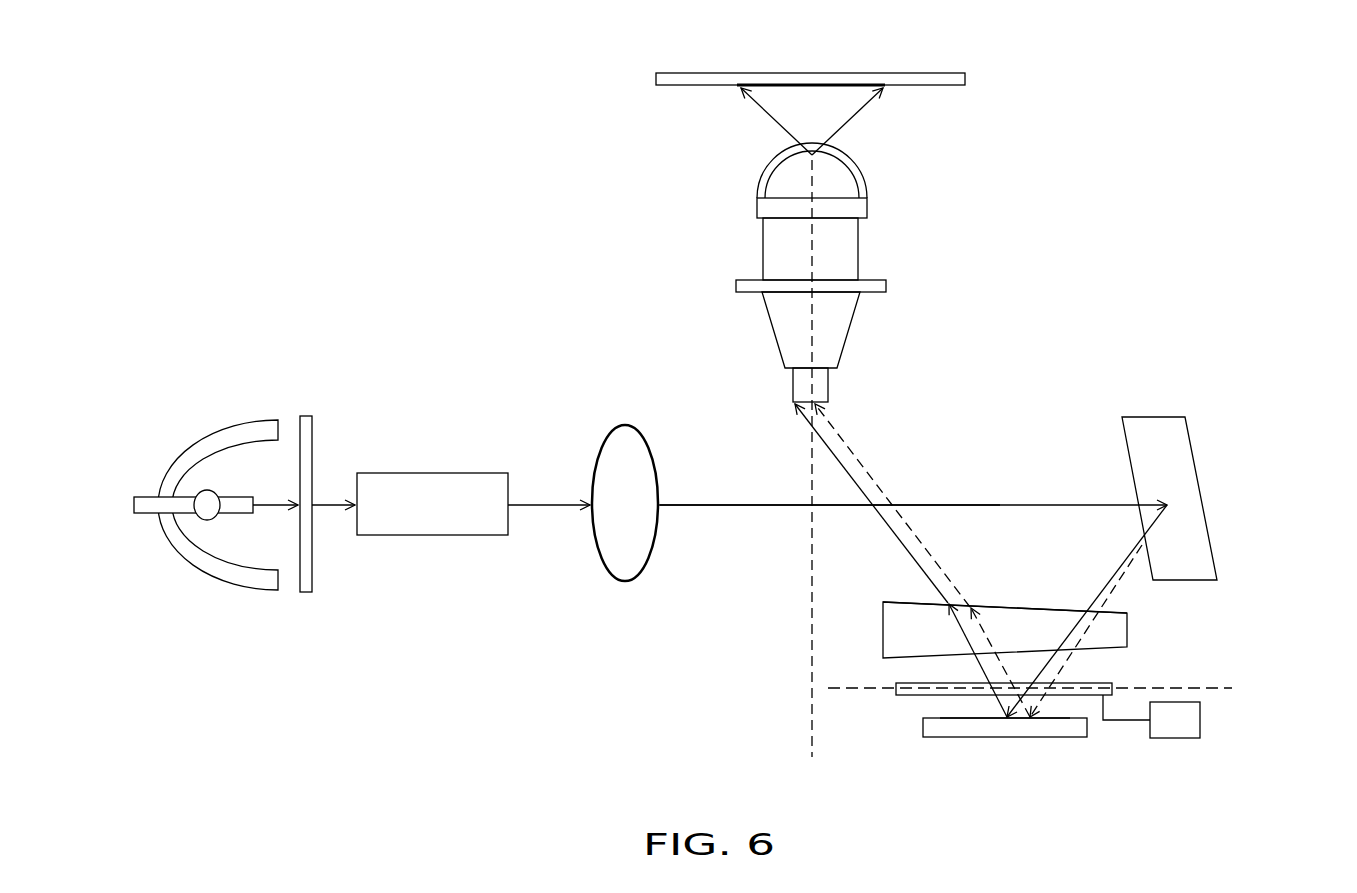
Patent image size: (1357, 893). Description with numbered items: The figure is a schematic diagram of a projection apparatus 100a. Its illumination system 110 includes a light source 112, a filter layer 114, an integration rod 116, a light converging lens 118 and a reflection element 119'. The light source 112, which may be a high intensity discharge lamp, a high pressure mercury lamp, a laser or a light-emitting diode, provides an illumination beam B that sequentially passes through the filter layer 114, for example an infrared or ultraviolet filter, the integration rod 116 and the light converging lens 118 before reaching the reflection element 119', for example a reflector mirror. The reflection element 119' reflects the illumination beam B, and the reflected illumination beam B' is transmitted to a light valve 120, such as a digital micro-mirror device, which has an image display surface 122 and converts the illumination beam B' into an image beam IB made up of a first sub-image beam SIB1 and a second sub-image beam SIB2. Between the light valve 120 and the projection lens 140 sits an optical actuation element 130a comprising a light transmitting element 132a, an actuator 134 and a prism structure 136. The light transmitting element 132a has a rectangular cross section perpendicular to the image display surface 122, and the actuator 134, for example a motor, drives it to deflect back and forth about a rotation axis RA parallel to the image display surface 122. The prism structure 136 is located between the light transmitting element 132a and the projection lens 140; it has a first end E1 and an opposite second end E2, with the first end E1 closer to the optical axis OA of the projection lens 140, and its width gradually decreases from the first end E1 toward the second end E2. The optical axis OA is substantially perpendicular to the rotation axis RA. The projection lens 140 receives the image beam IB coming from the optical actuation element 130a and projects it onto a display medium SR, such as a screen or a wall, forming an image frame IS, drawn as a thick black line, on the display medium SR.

The projection apparatus 100a is at (1333, 790).
The illumination system 110 is at (218, 362).
The light source 112 is at (202, 563).
The filter layer 114 is at (307, 595).
The integration rod 116 is at (428, 520).
The light converging lens 118 is at (622, 560).
The reflection element 119' is at (1195, 485).
The light valve 120 is at (1078, 727).
The image display surface 122 is at (966, 716).
The optical actuation element 130a is at (331, 158).
The light transmitting element 132a is at (1102, 687).
The actuator 134 is at (1190, 728).
The prism structure 136 is at (897, 628).
The projection lens 140 is at (852, 242).
The illumination beam B is at (653, 553).
The reflected illumination beam B' is at (1087, 611).
The first end E1 is at (897, 598).
The second end E2 is at (1113, 605).
The image beam IB is at (902, 110).
The image frame IS is at (785, 83).
The optical axis OA is at (811, 730).
The rotation axis RA is at (875, 687).
The first sub-image beam SIB1 is at (867, 472).
The second sub-image beam SIB2 is at (828, 448).
The display medium SR is at (975, 84).